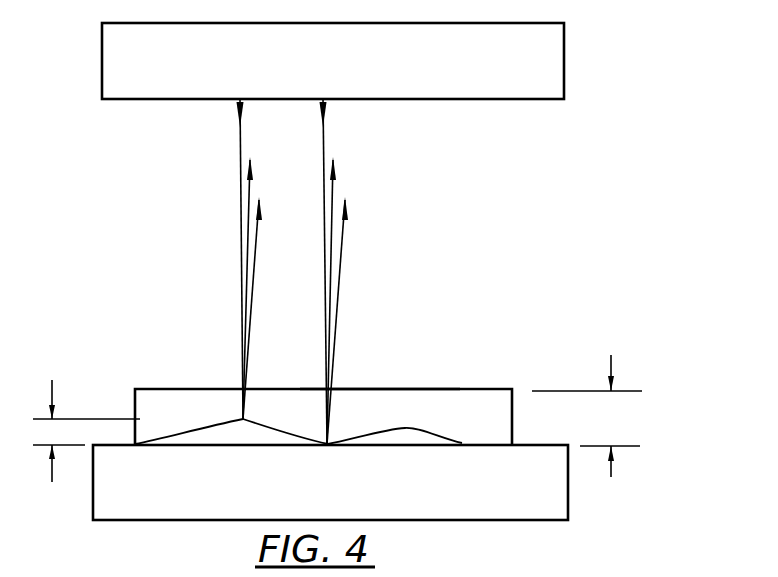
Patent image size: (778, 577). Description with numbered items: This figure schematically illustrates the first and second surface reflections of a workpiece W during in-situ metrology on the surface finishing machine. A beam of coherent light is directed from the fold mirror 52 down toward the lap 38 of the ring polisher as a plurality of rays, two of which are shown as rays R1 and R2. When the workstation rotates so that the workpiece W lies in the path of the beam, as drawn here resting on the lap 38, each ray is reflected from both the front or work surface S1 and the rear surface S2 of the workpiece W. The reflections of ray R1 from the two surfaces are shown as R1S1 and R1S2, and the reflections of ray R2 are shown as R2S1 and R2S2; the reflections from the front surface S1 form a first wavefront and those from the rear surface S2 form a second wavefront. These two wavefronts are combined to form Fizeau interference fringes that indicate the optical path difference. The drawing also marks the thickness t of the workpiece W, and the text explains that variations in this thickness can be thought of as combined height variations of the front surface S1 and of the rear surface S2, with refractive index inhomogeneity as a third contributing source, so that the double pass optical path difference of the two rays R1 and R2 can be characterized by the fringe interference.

The fold mirror 52 is at (564, 62).
The lap 38 is at (568, 511).
The workpiece W is at (457, 389).
The front or work surface S1 is at (385, 446).
The rear surface S2 is at (395, 348).
The ray R1 is at (325, 124).
The ray R2 is at (240, 140).
The reflection of ray R1 from front surface S1 R1S1 is at (334, 186).
The reflection of ray R1 from rear surface S2 R1S2 is at (346, 236).
The reflection of ray R2 from front surface S1 R2S1 is at (250, 180).
The reflection of ray R2 from rear surface S2 R2S2 is at (259, 232).
The thickness t is at (587, 416).